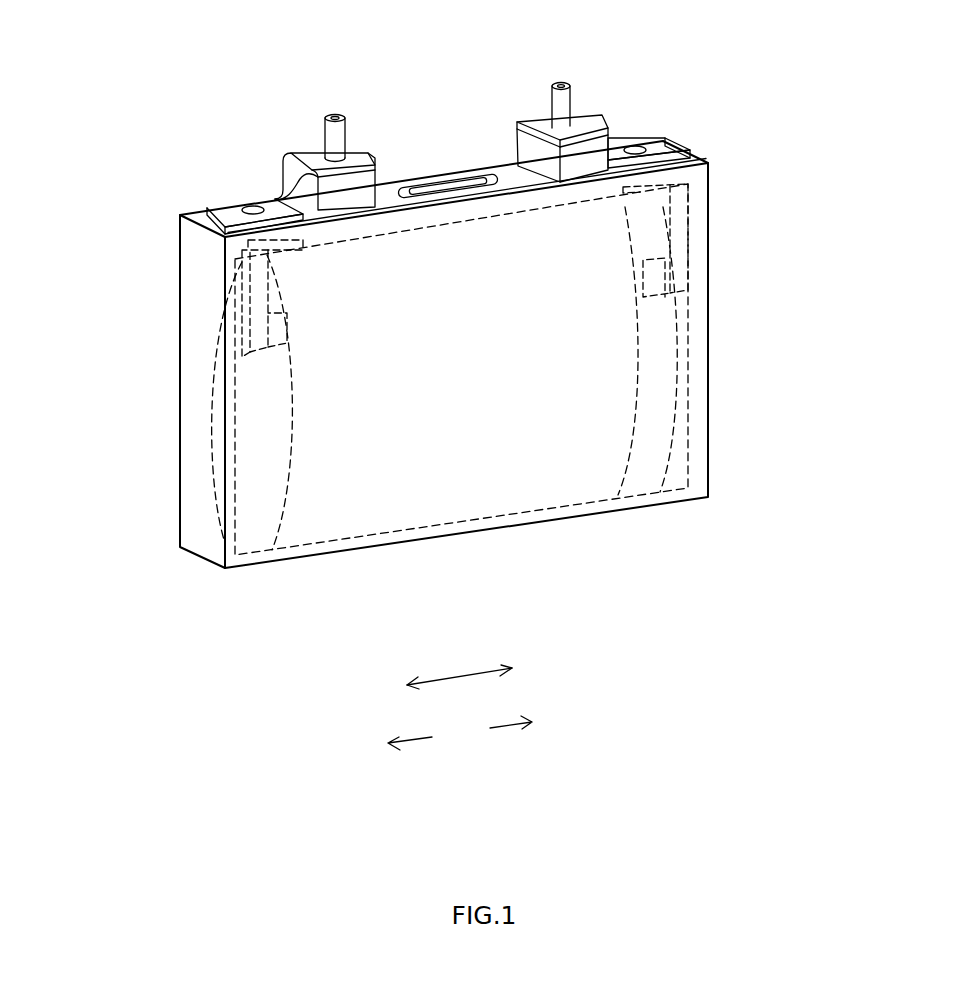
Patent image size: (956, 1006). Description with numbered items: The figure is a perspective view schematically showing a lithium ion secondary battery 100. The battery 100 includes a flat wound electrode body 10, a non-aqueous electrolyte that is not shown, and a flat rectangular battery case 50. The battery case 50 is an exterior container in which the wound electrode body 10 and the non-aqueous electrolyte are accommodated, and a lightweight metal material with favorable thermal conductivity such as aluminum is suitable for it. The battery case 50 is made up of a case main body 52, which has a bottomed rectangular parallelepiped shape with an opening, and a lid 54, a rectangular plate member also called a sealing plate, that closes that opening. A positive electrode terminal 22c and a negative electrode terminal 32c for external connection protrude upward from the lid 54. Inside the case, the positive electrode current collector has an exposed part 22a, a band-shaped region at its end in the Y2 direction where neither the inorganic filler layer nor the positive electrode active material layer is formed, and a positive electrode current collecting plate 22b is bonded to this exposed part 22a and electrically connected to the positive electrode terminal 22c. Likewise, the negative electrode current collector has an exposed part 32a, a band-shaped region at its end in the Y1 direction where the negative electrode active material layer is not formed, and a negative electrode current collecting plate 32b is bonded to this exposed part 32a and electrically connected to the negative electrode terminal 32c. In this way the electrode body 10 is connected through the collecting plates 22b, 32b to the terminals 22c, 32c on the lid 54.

The lithium ion secondary battery 100 is at (140, 93).
The wound electrode body 10 is at (395, 528).
The exposed part of the positive electrode current collector 22a is at (262, 530).
The positive electrode current collecting plate 22b is at (243, 343).
The positive electrode terminal 22c is at (335, 115).
The exposed part of the negative electrode current collector 32a is at (645, 475).
The negative electrode current collecting plate 32b is at (677, 268).
The negative electrode terminal 32c is at (560, 78).
The battery case 50 is at (710, 180).
The case main body 52 is at (710, 355).
The lid 54 is at (200, 218).